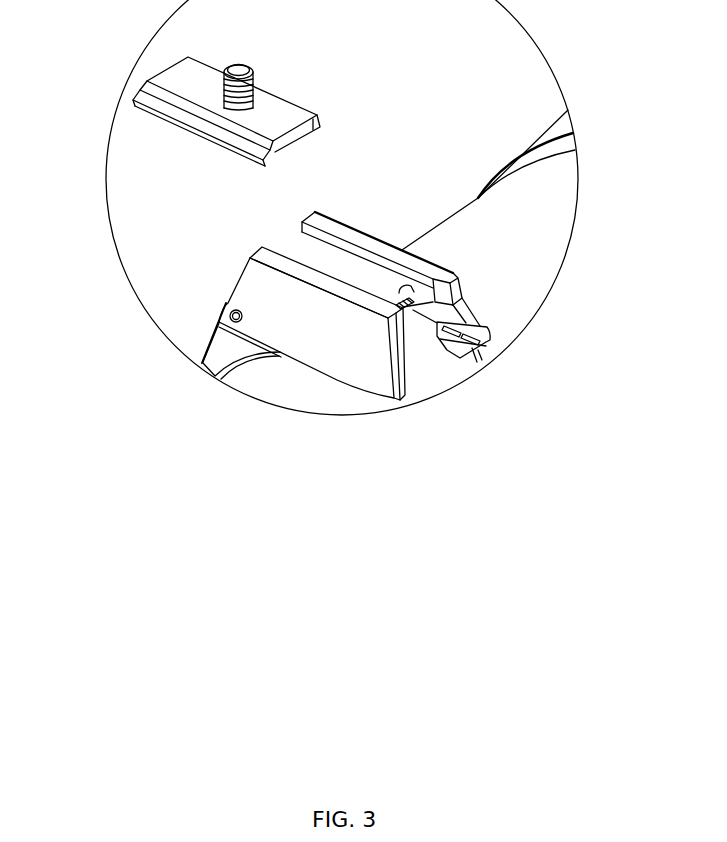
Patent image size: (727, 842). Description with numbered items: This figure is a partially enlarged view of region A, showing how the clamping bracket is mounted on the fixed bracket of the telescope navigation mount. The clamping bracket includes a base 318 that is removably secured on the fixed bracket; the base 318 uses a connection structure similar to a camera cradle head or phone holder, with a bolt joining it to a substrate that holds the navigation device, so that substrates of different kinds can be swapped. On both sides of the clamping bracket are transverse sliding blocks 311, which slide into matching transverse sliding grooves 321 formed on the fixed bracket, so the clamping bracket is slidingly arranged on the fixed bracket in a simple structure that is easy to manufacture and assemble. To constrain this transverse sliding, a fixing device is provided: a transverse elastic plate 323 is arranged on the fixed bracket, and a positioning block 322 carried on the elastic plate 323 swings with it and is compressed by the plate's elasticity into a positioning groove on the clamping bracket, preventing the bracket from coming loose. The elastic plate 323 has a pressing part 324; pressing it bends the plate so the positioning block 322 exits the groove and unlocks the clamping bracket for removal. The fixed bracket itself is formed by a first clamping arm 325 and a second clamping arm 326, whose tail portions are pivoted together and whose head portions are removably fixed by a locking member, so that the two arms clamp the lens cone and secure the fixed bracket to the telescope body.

The base 318 is at (193, 95).
The transverse sliding block 311 is at (320, 130).
The transverse sliding groove 321 is at (332, 243).
The positioning block 322 is at (406, 305).
The transverse elastic plate 323 is at (440, 320).
The pressing part 324 is at (470, 343).
The first clamping arm 325 is at (223, 350).
The second clamping arm 326 is at (328, 347).
The partially enlarged region A is at (272, 403).